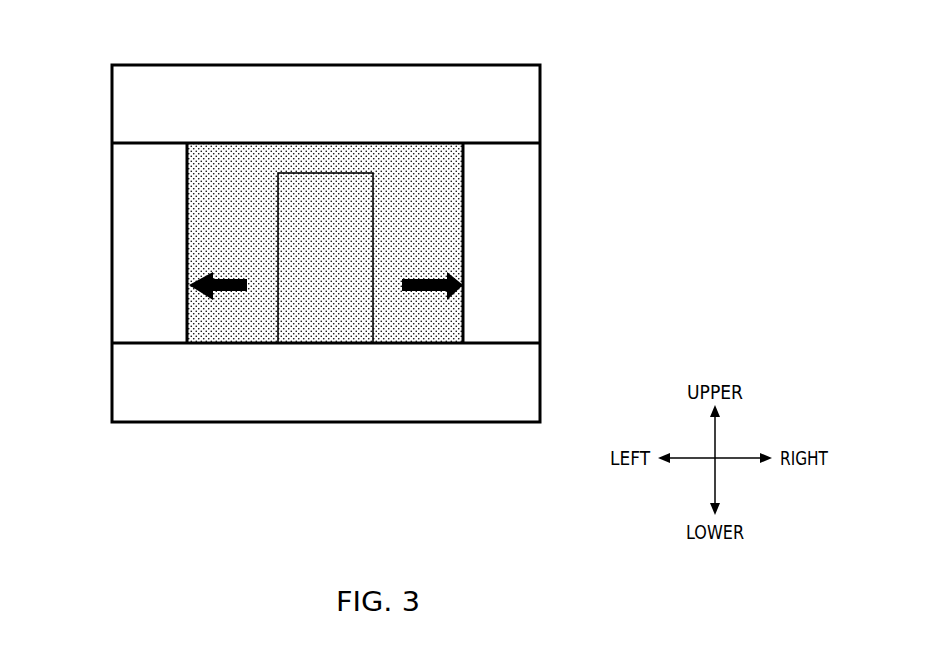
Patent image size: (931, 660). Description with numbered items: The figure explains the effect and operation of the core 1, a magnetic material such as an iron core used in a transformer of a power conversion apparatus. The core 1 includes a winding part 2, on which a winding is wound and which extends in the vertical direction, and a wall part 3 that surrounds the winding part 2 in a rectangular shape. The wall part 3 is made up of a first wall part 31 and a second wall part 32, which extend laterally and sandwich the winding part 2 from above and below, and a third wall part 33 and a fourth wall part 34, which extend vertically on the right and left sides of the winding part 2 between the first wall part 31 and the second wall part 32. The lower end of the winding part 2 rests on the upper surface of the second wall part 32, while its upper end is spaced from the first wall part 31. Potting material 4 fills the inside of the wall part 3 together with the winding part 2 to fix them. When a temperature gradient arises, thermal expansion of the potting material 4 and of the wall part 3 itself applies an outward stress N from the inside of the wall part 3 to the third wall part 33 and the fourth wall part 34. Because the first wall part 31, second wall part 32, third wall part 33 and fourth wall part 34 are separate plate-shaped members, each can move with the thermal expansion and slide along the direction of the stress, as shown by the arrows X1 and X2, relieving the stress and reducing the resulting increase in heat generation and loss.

The core 1 is at (661, 20).
The winding part 2 is at (320, 313).
The wall part 3 is at (501, 62).
The potting material 4 is at (423, 187).
The first wall part 31 is at (285, 88).
The second wall part 32 is at (243, 393).
The third wall part 33 is at (508, 227).
The fourth wall part 34 is at (127, 262).
The outward stress N is at (213, 290).
The sliding direction arrow X1 is at (525, 317).
The sliding direction arrow X2 is at (125, 317).